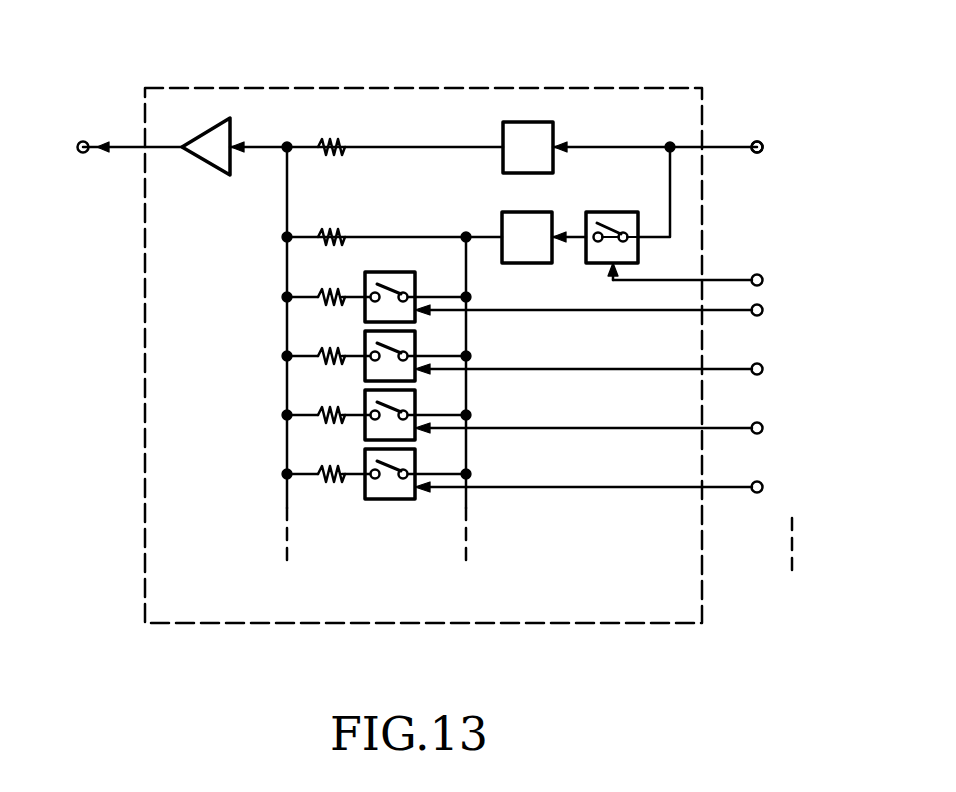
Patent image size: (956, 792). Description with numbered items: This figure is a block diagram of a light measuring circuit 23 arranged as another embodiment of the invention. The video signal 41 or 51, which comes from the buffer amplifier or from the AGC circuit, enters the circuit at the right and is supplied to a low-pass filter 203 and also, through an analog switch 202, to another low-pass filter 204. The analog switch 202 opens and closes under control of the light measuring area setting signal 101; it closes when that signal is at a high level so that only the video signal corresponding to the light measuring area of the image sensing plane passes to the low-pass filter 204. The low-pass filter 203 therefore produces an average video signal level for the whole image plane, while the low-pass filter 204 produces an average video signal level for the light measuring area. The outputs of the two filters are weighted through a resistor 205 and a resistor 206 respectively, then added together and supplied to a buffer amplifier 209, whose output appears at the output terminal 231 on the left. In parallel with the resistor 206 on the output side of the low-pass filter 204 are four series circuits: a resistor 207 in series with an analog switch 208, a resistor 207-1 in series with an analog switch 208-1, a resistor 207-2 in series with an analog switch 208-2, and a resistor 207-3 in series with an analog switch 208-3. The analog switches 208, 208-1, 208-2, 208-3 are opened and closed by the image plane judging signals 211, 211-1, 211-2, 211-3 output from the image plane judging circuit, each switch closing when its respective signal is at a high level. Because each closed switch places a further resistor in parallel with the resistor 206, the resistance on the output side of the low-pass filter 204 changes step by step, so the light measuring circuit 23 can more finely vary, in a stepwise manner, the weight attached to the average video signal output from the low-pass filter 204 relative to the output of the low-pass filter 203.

The light measuring circuit 23 is at (256, 86).
The output terminal 231 is at (82, 153).
The buffer amplifier 209 is at (201, 160).
The resistor 205 is at (342, 140).
The resistor 206 is at (328, 229).
The resistor 207 is at (326, 290).
The resistor 207-1 is at (322, 349).
The resistor 207-2 is at (322, 408).
The resistor 207-3 is at (326, 467).
The analog switch 208 is at (417, 283).
The analog switch 208-1 is at (417, 342).
The analog switch 208-2 is at (417, 402).
The analog switch 208-3 is at (417, 462).
The low-pass filter 203 is at (556, 136).
The low-pass filter 204 is at (502, 214).
The analog switch 202 is at (608, 211).
The video signal 41 is at (762, 150).
The video signal 51 is at (785, 175).
The light measuring area setting signal 101 is at (762, 277).
The image plane judging signal 211 is at (763, 311).
The image plane judging signal 211-1 is at (763, 370).
The image plane judging signal 211-2 is at (763, 429).
The image plane judging signal 211-3 is at (763, 488).